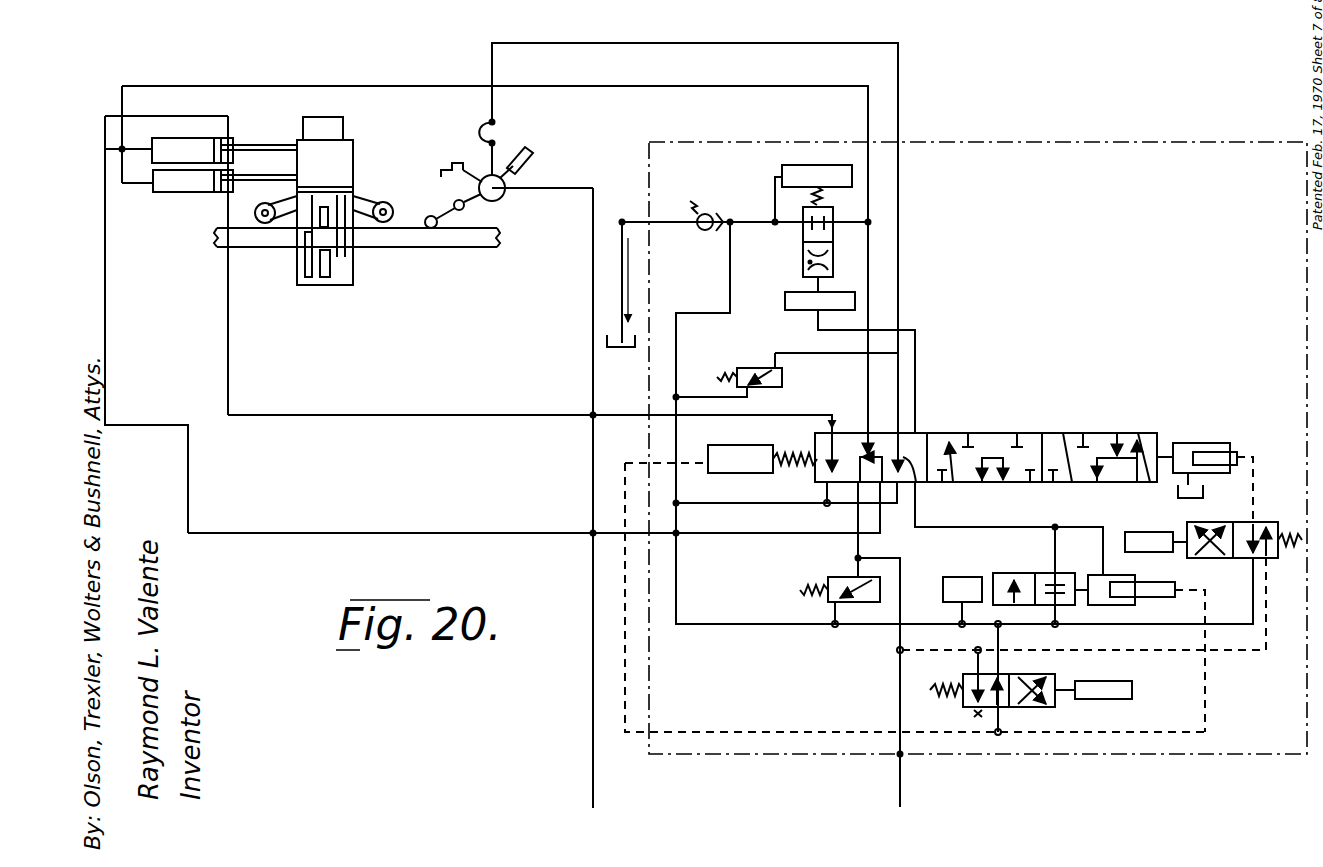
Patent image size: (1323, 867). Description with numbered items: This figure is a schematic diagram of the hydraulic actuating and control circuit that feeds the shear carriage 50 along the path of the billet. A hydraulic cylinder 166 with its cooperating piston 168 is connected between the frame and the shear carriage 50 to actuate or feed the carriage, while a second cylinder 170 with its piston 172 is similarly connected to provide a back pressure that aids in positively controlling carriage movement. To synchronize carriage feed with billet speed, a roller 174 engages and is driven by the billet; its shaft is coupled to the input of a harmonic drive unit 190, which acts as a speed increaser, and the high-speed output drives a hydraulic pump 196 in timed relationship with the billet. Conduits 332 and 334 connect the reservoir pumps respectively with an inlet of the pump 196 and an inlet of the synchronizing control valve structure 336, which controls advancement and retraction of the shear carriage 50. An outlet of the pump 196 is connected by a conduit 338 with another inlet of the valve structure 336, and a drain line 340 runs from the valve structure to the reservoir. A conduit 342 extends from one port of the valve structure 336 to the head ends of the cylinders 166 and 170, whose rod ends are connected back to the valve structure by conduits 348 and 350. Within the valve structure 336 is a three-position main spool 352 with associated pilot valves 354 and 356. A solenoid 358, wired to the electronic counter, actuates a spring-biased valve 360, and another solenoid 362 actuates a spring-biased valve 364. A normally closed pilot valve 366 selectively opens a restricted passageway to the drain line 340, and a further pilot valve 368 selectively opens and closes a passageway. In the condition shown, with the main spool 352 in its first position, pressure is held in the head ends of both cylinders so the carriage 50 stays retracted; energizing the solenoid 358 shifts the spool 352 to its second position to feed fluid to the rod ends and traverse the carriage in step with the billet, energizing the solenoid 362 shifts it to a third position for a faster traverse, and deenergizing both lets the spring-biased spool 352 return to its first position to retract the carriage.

The shear carriage 50 is at (372, 195).
The hydraulic cylinder 166 is at (188, 146).
The piston 168 is at (266, 146).
The second cylinder 170 is at (190, 194).
The piston 172 is at (248, 186).
The roller 174 is at (431, 229).
The harmonic drive unit 190 is at (463, 211).
The hydraulic pump 196 is at (496, 200).
The conduit 332 is at (593, 753).
The conduit 334 is at (900, 772).
The synchronizing control valve structure 336 is at (1044, 136).
The conduit 338 is at (720, 43).
The drain line 340 is at (622, 298).
The conduit 342 is at (421, 85).
The conduit 348 is at (433, 533).
The conduit 350 is at (404, 415).
The main spool 352 is at (1012, 432).
The pilot valve 354 is at (747, 472).
The pilot valve 356 is at (1210, 443).
The solenoid 358 is at (1160, 521).
The spring-biased valve 360 is at (1236, 522).
The solenoid 362 is at (1105, 699).
The spring-biased valve 364 is at (1005, 708).
The normally closed pilot valve 366 is at (838, 288).
The pilot valve 368 is at (1120, 604).